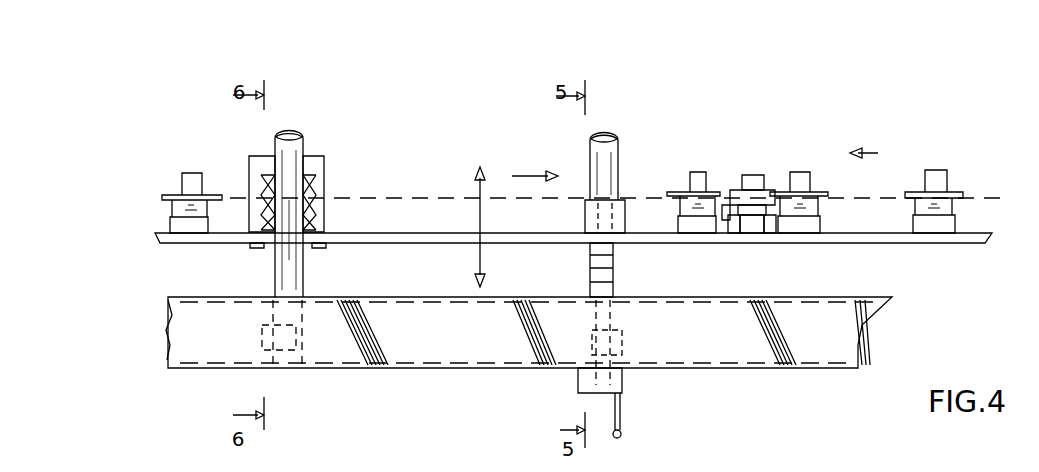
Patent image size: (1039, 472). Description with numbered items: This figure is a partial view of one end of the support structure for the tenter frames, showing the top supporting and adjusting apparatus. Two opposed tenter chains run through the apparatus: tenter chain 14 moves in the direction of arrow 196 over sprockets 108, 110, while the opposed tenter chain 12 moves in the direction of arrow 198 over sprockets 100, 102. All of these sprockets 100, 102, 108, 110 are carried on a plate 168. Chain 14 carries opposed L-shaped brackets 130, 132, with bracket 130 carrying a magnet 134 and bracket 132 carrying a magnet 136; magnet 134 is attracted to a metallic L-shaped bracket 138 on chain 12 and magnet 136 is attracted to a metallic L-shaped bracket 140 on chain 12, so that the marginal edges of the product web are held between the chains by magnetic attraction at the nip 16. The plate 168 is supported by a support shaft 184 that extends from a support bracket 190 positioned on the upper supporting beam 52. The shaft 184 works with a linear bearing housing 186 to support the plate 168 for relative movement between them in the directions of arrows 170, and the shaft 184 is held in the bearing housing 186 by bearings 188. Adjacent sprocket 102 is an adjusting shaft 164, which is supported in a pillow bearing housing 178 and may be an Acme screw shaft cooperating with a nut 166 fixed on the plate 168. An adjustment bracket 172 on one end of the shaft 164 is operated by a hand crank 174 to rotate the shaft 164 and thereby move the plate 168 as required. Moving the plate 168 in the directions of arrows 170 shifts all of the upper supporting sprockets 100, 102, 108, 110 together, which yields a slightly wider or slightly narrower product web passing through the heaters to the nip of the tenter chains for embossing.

The tenter chain 12 is at (416, 198).
The tenter chain 14 is at (795, 218).
The nip 16 is at (733, 218).
The upper supporting beam 52 is at (487, 347).
The sprocket 100 is at (207, 192).
The sprocket 102 is at (694, 172).
The sprocket 108 is at (818, 176).
The sprocket 110 is at (958, 190).
The L-shaped bracket 130 is at (772, 178).
The L-shaped bracket 132 is at (772, 205).
The magnet 134 is at (756, 178).
The magnet 136 is at (758, 218).
The metallic L-shaped bracket 138 is at (735, 178).
The metallic L-shaped bracket 140 is at (736, 222).
The adjusting shaft 164 is at (618, 148).
The nut 166 is at (598, 215).
The plate 168 is at (976, 240).
The arrows 170 is at (478, 212).
The adjustment bracket 172 is at (622, 382).
The hand crank 174 is at (622, 434).
The pillow bearing housing 178 is at (624, 336).
The support shaft 184 is at (306, 140).
The linear bearing housing 186 is at (325, 160).
The bearings 188 is at (316, 185).
The support bracket 190 is at (264, 336).
The arrow 196 is at (876, 153).
The arrow 198 is at (522, 174).